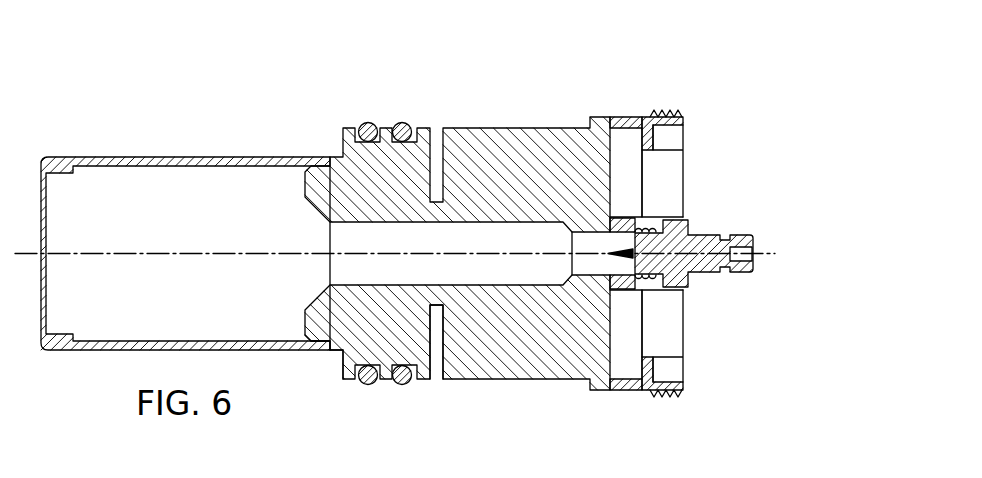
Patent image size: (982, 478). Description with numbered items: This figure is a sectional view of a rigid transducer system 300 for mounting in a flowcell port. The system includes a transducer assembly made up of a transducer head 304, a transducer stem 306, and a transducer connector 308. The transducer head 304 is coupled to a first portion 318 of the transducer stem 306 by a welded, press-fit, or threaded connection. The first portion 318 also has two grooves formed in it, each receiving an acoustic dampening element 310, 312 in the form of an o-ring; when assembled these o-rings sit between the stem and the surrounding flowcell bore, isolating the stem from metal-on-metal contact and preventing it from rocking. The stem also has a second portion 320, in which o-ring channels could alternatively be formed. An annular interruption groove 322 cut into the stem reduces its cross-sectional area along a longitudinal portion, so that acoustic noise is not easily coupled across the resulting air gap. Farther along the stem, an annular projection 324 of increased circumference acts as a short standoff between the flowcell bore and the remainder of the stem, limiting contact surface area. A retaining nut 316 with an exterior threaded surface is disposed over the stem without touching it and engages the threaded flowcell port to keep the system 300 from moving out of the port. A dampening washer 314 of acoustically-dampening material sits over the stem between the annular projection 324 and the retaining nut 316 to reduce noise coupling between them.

The rigid transducer system 300 is at (166, 62).
The transducer head 304 is at (150, 157).
The transducer stem 306 is at (464, 249).
The transducer connector 308 is at (707, 236).
The acoustic dampening element 310 is at (364, 124).
The acoustic dampening element 312 is at (401, 124).
The dampening washer 314 is at (627, 388).
The retaining nut 316 is at (666, 390).
The first portion 318 is at (345, 326).
The second portion 320 is at (548, 366).
The interruption groove 322 is at (438, 342).
The annular projection 324 is at (598, 117).